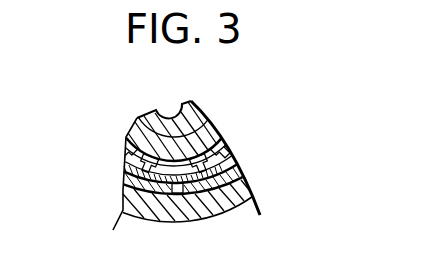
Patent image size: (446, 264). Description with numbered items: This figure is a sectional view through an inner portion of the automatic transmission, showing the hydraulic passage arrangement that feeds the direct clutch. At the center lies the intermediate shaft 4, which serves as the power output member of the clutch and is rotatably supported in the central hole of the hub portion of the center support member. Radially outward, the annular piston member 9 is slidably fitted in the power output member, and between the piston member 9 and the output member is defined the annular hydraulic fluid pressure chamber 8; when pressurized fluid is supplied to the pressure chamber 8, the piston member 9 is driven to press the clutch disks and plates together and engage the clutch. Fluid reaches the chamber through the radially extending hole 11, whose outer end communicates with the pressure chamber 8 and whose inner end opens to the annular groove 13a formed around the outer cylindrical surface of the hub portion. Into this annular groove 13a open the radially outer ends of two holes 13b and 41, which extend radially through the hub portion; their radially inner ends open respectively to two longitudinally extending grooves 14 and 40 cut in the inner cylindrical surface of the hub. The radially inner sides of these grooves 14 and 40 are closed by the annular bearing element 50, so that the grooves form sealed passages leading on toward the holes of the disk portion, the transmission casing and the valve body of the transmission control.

The intermediate shaft 4 is at (212, 130).
The annular bearing element 50 is at (128, 138).
The longitudinally extending groove 14 is at (227, 152).
The longitudinally extending groove 40 is at (128, 142).
The hole 41 is at (125, 178).
The annular groove 13a is at (231, 155).
The hole 13b is at (203, 170).
The annular hydraulic fluid pressure chamber 8 is at (235, 186).
The radially extending hole 11 is at (178, 193).
The piston member 9 is at (228, 203).